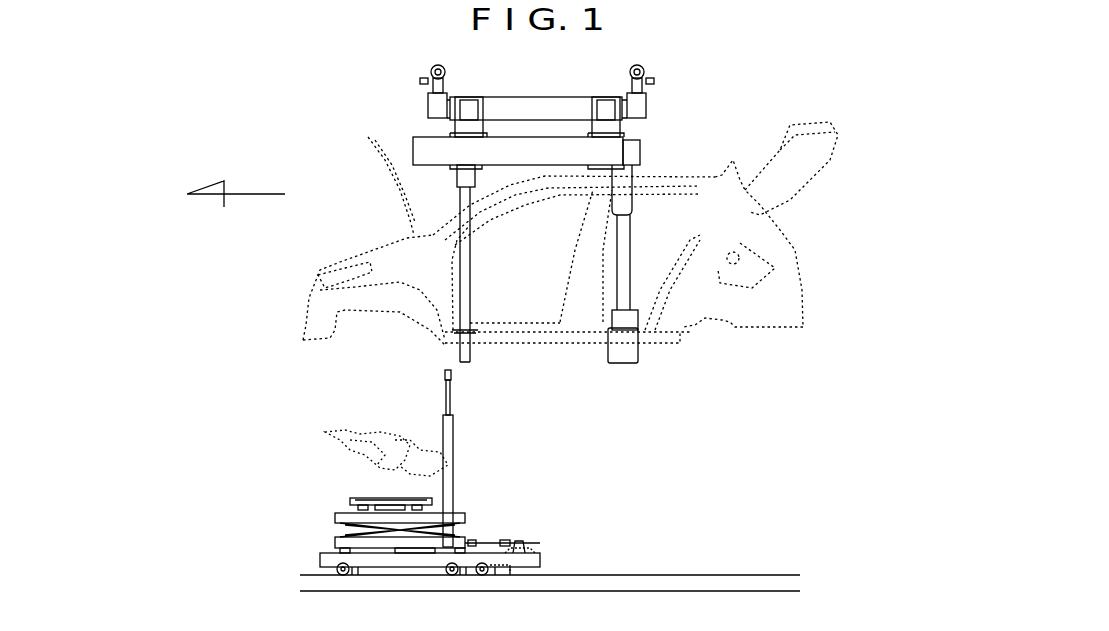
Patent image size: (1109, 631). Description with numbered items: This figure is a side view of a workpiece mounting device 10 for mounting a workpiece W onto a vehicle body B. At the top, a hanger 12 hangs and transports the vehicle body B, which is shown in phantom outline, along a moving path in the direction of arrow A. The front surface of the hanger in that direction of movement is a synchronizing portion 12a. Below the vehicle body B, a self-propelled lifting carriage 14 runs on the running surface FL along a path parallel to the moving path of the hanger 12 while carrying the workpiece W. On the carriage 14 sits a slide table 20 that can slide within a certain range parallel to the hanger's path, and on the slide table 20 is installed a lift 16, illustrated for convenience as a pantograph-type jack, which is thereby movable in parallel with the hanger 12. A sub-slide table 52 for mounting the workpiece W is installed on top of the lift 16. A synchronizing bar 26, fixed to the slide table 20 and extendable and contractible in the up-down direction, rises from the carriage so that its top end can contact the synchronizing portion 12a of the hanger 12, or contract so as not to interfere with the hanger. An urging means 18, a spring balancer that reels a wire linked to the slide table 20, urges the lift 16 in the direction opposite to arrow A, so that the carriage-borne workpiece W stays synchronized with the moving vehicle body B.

The workpiece mounting device 10 is at (777, 413).
The hanger 12 is at (613, 150).
The synchronizing portion 12a is at (440, 350).
The self-propelled lifting carriage 14 is at (540, 560).
The lift 16 is at (335, 517).
The urging means 18 is at (520, 540).
The slide table 20 is at (333, 545).
The synchronizing bar 26 is at (450, 433).
The sub-slide table 52 is at (350, 497).
The direction of movement of the hanger A is at (250, 194).
The vehicle body B is at (750, 217).
The workpiece W is at (375, 448).
The running surface FL is at (766, 575).